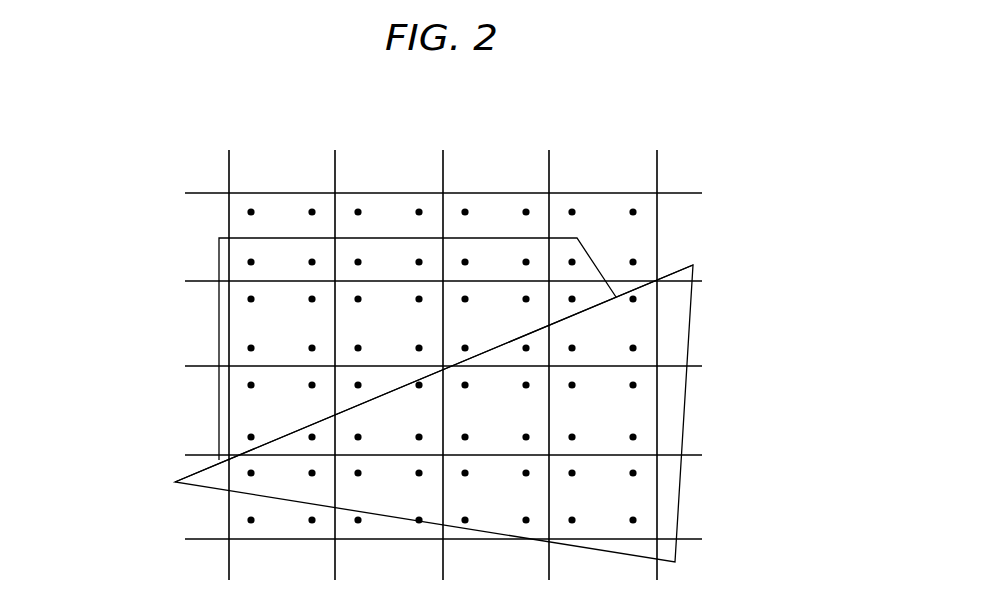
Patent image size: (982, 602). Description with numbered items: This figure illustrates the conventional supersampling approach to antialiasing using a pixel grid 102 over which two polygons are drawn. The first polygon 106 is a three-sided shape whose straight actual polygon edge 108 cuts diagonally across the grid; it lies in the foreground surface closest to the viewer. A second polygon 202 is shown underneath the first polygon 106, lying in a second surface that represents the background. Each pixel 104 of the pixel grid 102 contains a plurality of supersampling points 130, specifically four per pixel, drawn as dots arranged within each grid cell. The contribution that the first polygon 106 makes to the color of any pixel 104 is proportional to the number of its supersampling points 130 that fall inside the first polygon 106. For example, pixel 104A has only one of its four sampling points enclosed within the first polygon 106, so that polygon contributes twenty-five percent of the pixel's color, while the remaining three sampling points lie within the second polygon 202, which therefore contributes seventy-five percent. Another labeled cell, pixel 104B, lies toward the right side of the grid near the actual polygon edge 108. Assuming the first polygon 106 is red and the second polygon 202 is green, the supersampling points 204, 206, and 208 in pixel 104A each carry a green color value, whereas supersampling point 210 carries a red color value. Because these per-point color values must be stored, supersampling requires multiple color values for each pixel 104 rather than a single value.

The pixel grid 102 is at (140, 180).
The pixel 104 is at (375, 205).
The pixel 104A is at (307, 445).
The pixel 104B is at (640, 322).
The polygon 106 is at (672, 410).
The actual polygon edge 108 is at (680, 263).
The supersampling points 130 is at (632, 262).
The second polygon 202 is at (216, 259).
The supersampling point 204 is at (251, 385).
The supersampling point 206 is at (312, 385).
The supersampling point 208 is at (251, 437).
The supersampling point 210 is at (312, 437).